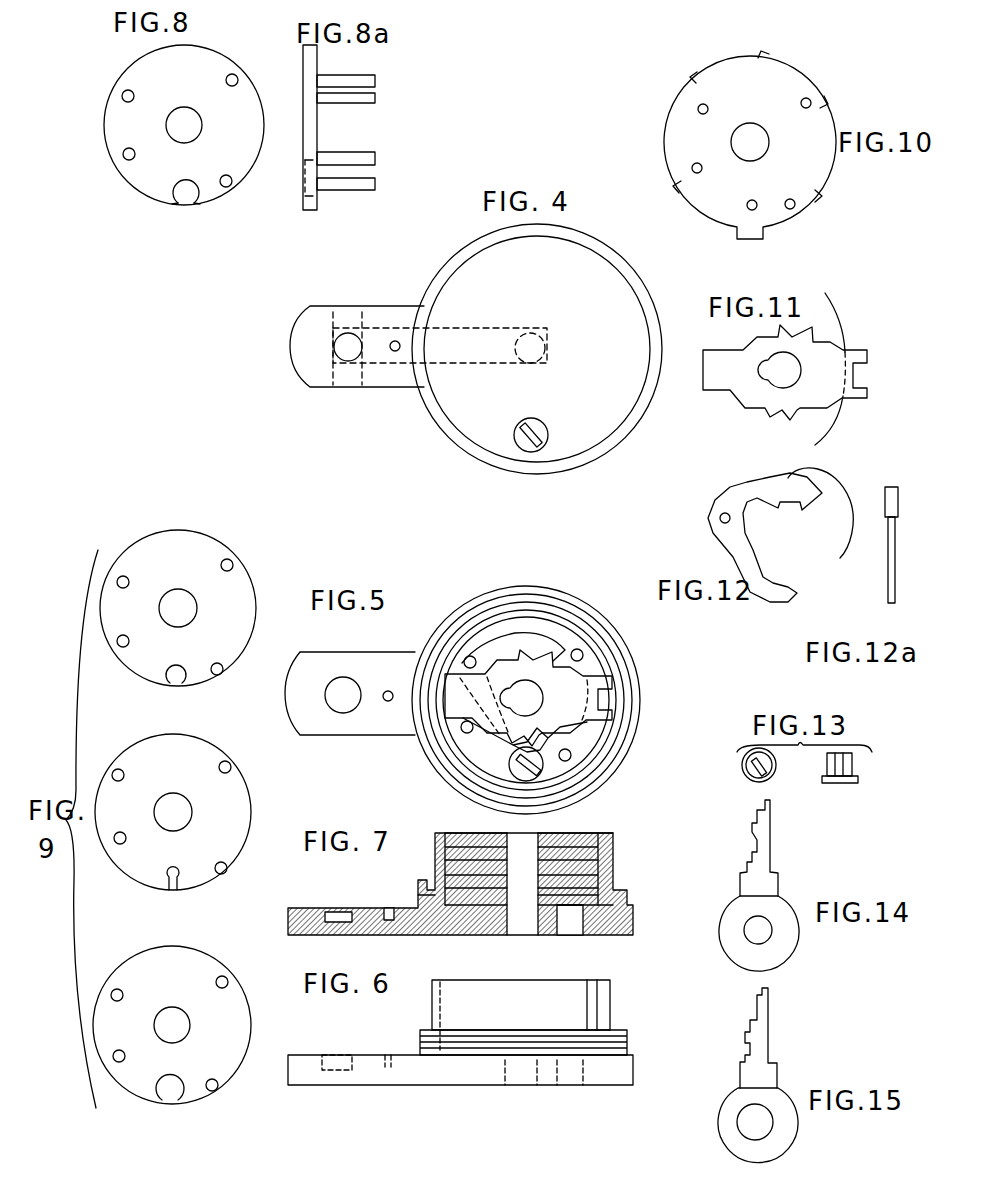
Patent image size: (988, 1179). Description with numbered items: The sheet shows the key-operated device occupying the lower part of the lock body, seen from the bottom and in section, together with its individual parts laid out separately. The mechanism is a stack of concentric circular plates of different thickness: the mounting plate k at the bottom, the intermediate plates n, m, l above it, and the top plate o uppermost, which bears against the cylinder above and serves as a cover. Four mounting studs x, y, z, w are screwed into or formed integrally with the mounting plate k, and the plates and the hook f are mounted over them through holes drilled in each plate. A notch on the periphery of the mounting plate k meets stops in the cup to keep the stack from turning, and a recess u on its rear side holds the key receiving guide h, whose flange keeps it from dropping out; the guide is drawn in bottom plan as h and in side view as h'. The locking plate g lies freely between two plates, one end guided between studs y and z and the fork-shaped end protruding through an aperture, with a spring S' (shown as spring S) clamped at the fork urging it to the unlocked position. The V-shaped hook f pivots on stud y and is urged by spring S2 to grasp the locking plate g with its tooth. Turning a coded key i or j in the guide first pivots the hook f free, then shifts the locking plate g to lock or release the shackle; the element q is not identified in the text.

In FIG. 4, the spring S is at (418, 364).
In FIG. 5, the spring S is at (350, 711).
In FIG. 7, the spring S is at (460, 884).
In FIG. 6, the spring S is at (460, 1051).
In FIG. 11, the spring S1 S' is at (844, 365).
In FIG. 12A, the spring S1 S' is at (894, 562).
In FIG. 12, the spring S2 is at (840, 556).
In FIG. 8, the mounting plate k is at (195, 203).
In FIG. 4, the mounting plate k is at (548, 441).
In FIG. 7, the mounting plate k is at (633, 925).
In FIG. 8, the recess u is at (172, 206).
In FIG. 8, the mounting stud x is at (238, 76).
In FIG. 8A, the mounting stud x is at (375, 81).
In FIG. 5, the mounting stud x is at (580, 649).
In FIG. 8, the mounting stud y is at (122, 98).
In FIG. 8A, the mounting stud y is at (375, 98).
In FIG. 5, the mounting stud y is at (466, 657).
In FIG. 8, the mounting stud z is at (124, 158).
In FIG. 8A, the mounting stud z is at (375, 158).
In FIG. 5, the mounting stud z is at (462, 731).
In FIG. 8, the mounting stud w is at (231, 185).
In FIG. 8A, the mounting stud w is at (375, 184).
In FIG. 10, the mounting stud w is at (752, 210).
In FIG. 5, the mounting stud w is at (568, 761).
In FIG. 7, the intermediate plate n is at (613, 875).
In FIG. 9, the intermediate plate n is at (183, 685).
In FIG. 7, the intermediate plate m is at (613, 862).
In FIG. 9, the intermediate plate m is at (180, 885).
In FIG. 7, the intermediate plate l is at (613, 850).
In FIG. 9, the intermediate plate l is at (190, 1095).
In FIG. 7, the top plate o is at (613, 838).
In FIG. 5, the toothed plate q is at (600, 690).
In FIG. 7, the toothed plate q is at (613, 888).
In FIG. 11, the locking plate g is at (795, 412).
In FIG. 12, the hook f is at (709, 522).
In FIG. 5, the hook f is at (557, 633).
In FIG. 7, the hook f is at (627, 900).
In FIG. 5, the key receiving guide h is at (569, 781).
In FIG. 13, the key receiving guide h is at (755, 779).
In FIG. 13, the key receiving guide h' is at (840, 781).
In FIG. 14, the coded key i is at (771, 855).
In FIG. 15, the coded key j is at (760, 1035).